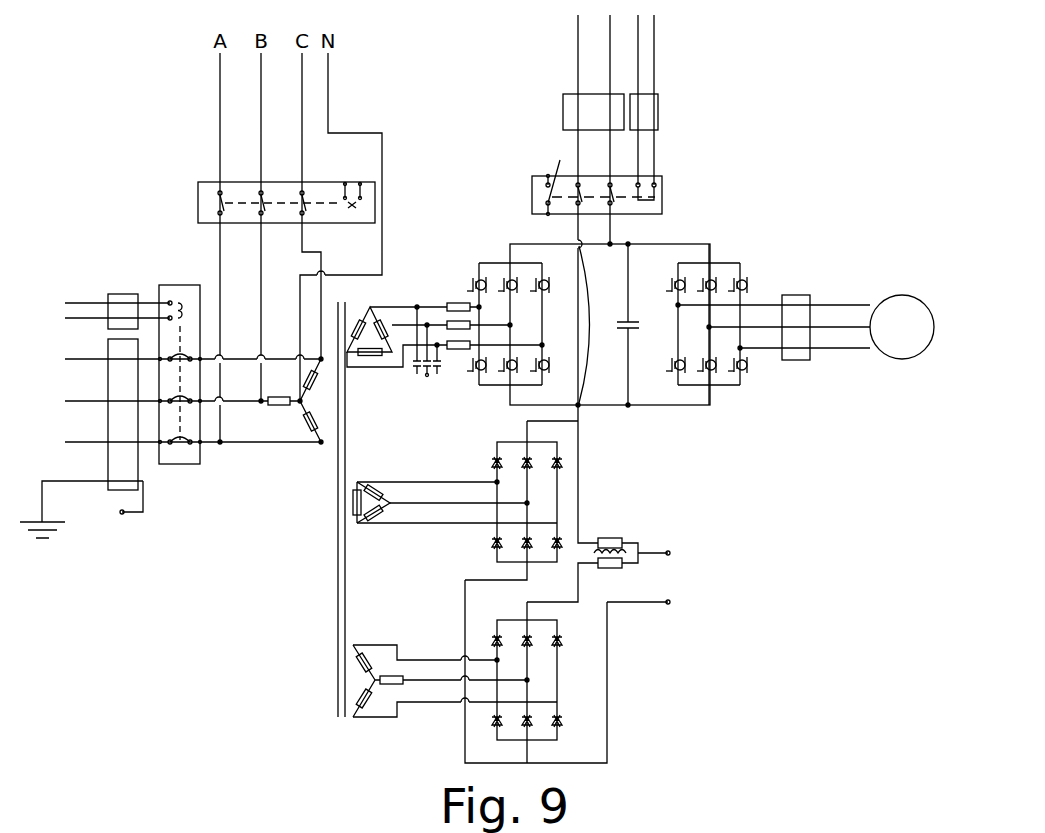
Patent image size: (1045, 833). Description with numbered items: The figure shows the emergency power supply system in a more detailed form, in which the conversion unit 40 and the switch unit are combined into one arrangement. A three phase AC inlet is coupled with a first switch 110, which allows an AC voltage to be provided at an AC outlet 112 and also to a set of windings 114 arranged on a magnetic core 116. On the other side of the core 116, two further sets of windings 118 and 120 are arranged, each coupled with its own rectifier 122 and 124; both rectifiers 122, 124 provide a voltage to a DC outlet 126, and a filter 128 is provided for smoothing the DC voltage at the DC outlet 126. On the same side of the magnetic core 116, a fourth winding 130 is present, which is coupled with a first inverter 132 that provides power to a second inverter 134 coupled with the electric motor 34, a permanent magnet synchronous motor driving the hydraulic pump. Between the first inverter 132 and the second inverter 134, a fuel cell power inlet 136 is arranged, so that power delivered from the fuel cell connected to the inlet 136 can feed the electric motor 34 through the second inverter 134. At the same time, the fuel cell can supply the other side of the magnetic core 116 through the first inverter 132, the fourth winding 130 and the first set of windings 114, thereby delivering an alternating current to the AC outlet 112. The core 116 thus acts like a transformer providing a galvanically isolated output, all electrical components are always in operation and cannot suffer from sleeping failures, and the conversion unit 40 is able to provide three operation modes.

The electric motor 34 is at (895, 312).
The conversion unit 40 is at (795, 63).
The first switch 110 is at (185, 292).
The AC outlet 112 is at (355, 82).
The set of windings 114 is at (303, 476).
The magnetic core 116 is at (349, 605).
The set of windings 118 is at (363, 470).
The set of windings 120 is at (407, 638).
The rectifier 122 is at (595, 440).
The rectifier 124 is at (595, 686).
The DC outlet 126 is at (669, 538).
The filter 128 is at (609, 528).
The fourth winding 130 is at (411, 275).
The inverter 132 is at (517, 204).
The second inverter 134 is at (741, 241).
The fuel cell power inlet 136 is at (614, 324).